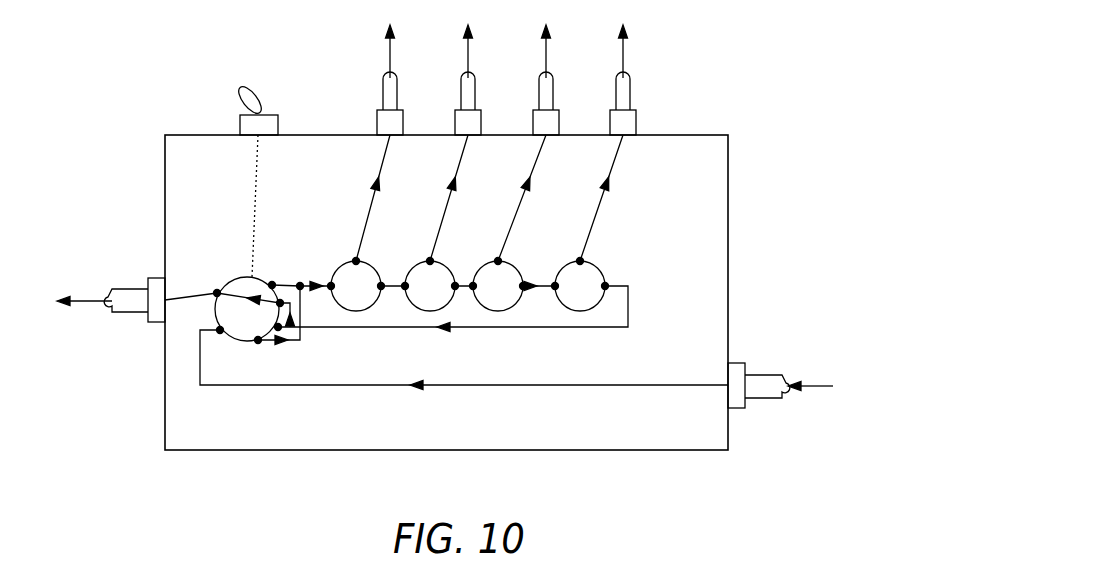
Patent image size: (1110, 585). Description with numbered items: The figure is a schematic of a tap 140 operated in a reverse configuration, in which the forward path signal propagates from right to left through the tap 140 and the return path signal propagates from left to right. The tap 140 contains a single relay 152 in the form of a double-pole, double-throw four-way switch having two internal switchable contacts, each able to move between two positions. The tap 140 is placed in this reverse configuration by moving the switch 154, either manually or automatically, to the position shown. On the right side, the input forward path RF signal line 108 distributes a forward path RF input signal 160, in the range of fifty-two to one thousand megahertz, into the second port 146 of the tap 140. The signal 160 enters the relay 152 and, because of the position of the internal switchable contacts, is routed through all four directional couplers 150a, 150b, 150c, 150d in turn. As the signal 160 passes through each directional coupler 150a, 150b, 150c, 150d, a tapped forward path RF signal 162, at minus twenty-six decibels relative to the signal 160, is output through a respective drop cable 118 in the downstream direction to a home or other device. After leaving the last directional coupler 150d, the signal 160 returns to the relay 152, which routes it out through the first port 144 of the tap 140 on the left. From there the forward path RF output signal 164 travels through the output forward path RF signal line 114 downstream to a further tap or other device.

The tap 140 is at (750, 54).
The switch 154 is at (240, 125).
The drop cable 118 is at (383, 96).
The tapped forward path RF signal 162 is at (388, 53).
The directional coupler 150a is at (342, 263).
The directional coupler 150b is at (420, 263).
The directional coupler 150c is at (488, 259).
The directional coupler 150d is at (598, 270).
The relay 152 is at (232, 280).
The first port 144 is at (153, 277).
The output forward path RF signal line 114 is at (125, 288).
The forward path RF output signal 164 is at (83, 295).
The second port 146 is at (733, 363).
The input forward path RF signal line 108 is at (765, 399).
The forward path RF input signal 160 is at (818, 385).